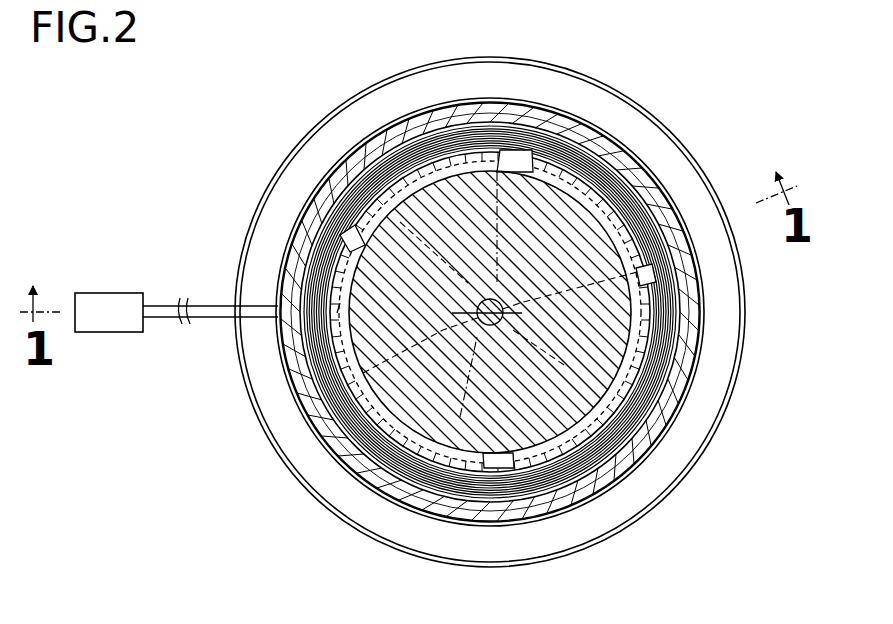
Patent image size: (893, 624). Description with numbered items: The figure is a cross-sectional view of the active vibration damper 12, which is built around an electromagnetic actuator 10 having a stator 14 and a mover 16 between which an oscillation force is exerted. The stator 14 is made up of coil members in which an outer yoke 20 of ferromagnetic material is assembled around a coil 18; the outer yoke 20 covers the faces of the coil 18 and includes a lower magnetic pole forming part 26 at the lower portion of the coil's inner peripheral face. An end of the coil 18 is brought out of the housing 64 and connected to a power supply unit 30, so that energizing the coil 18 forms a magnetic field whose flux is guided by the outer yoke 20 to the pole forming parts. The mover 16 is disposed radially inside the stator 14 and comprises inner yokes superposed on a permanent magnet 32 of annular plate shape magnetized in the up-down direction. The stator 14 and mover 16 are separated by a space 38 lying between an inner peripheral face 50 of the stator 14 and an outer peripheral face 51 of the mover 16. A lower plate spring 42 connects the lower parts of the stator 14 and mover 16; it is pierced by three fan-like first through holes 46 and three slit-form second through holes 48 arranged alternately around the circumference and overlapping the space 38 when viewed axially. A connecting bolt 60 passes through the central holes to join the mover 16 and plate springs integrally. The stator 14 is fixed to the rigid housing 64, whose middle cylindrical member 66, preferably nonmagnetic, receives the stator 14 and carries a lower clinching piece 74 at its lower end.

The electromagnetic actuator 10 is at (652, 172).
The active vibration damper 12 is at (686, 81).
The stator 14 is at (352, 152).
The mover 16 is at (350, 368).
The coil 18 is at (400, 157).
The outer yoke 20 is at (449, 270).
The lower magnetic pole forming part 26 is at (449, 270).
The power supply unit 30 is at (110, 312).
The permanent magnet 32 is at (352, 350).
The space 38 is at (490, 329).
The lower plate spring 42 is at (490, 334).
The first through hole 46 is at (495, 160).
The second through hole 48 is at (533, 170).
The inner peripheral face 50 is at (340, 303).
The outer peripheral face 51 is at (372, 413).
The connecting bolt 60 is at (502, 313).
The housing 64 is at (686, 418).
The middle cylindrical member 66 is at (647, 453).
The lower clinching piece 74 is at (618, 510).